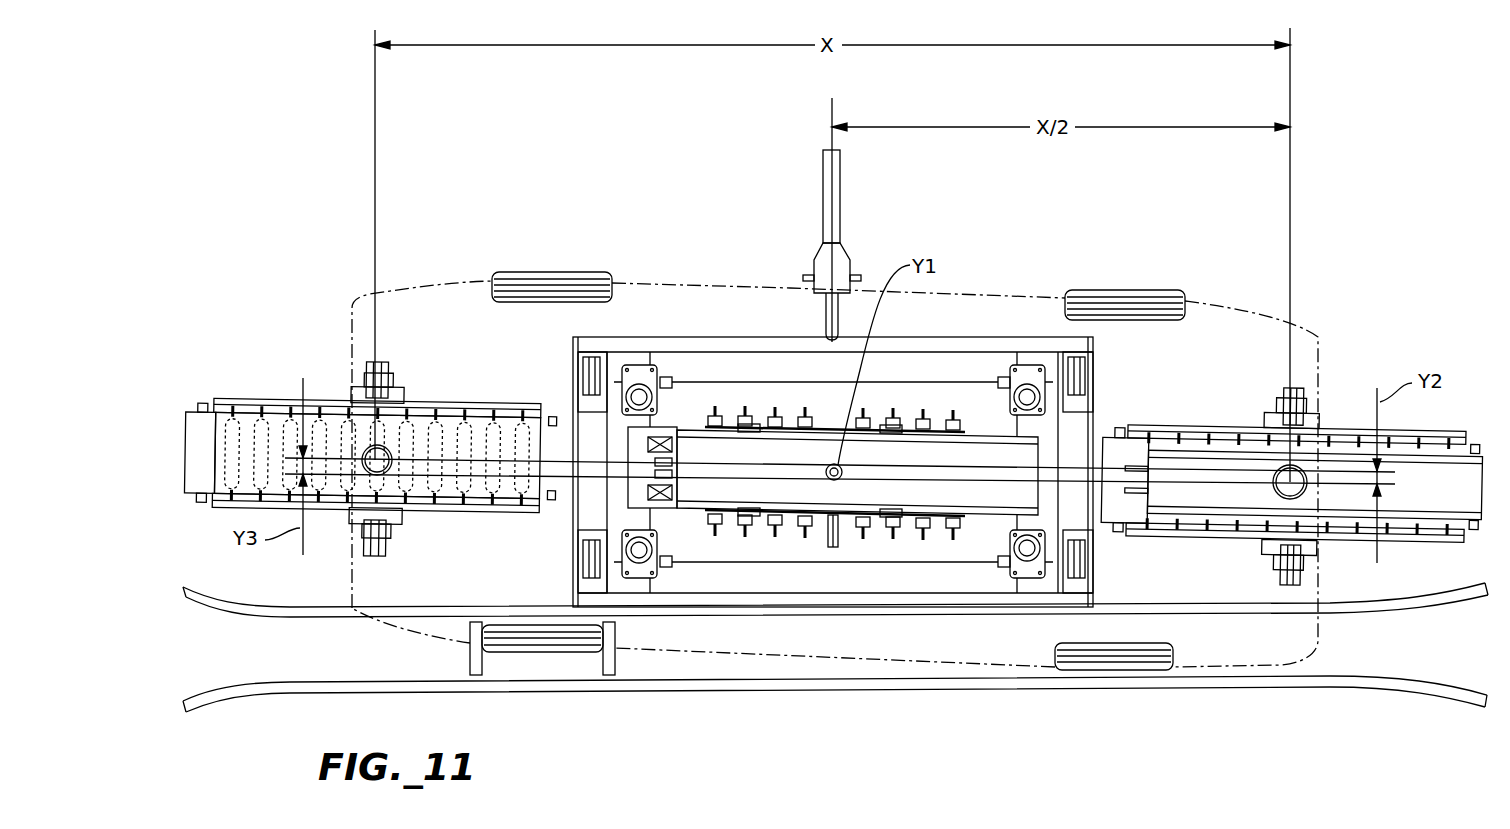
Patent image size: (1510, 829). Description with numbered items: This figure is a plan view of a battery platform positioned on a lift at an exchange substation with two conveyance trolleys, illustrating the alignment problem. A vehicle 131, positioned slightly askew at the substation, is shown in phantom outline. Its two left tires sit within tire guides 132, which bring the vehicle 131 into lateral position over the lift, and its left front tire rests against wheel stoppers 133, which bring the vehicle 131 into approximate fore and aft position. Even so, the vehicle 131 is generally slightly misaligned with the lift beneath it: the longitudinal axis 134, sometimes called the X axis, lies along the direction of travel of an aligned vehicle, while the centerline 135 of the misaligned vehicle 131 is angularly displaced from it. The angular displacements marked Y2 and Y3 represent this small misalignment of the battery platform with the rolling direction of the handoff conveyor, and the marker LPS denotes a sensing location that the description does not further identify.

The vehicle 131 is at (633, 283).
The tire guides 132 is at (1367, 613).
The wheel stoppers 133 is at (467, 657).
The longitudinal axis 134 is at (452, 500).
The centerline 135 is at (452, 455).
The linear position sensor LPS is at (825, 538).